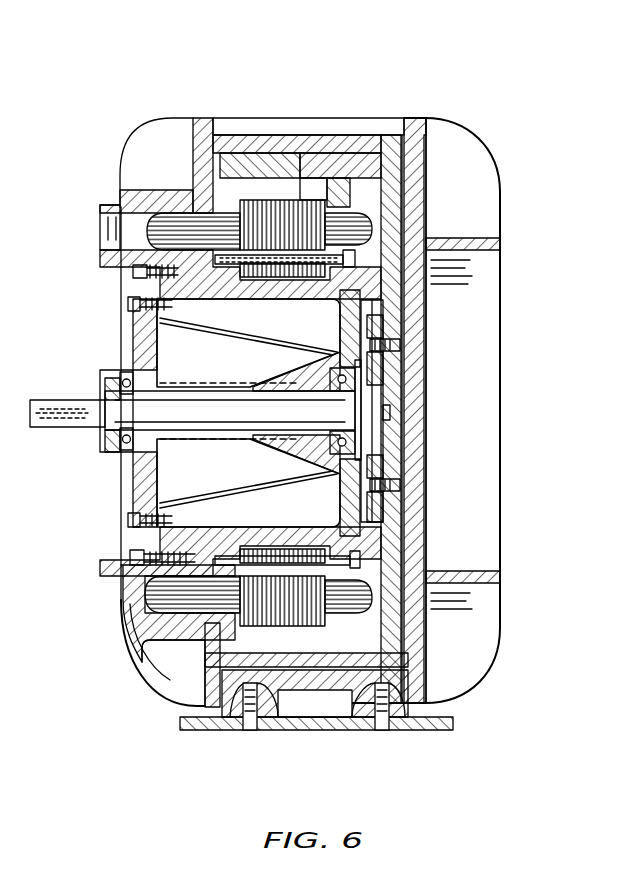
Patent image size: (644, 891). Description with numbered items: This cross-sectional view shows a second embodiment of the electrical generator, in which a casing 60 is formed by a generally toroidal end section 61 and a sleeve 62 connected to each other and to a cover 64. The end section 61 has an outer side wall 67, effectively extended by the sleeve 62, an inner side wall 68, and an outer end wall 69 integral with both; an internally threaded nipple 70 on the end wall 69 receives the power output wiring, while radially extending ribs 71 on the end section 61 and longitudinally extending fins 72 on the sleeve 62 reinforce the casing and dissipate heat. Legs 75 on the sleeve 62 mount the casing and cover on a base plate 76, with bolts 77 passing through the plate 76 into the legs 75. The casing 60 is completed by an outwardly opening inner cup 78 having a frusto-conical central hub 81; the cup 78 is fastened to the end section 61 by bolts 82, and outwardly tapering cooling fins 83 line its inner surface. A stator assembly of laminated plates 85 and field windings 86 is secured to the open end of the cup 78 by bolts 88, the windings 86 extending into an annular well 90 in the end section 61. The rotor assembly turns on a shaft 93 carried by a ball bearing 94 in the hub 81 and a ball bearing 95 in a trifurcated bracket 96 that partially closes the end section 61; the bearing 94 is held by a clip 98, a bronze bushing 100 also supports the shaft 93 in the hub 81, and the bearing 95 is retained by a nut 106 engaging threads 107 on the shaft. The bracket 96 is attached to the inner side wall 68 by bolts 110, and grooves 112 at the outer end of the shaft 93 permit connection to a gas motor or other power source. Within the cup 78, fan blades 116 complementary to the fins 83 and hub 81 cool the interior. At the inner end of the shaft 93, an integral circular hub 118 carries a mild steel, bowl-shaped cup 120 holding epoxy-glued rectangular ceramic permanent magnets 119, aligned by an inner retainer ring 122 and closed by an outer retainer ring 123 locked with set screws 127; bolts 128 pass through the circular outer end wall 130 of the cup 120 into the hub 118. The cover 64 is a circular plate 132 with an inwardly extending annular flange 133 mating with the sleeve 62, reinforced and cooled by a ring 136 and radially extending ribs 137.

The casing 60 is at (182, 78).
The toroidal end section 61 is at (188, 119).
The sleeve 62 is at (250, 135).
The cover 64 is at (501, 410).
The outer side wall 67 is at (143, 650).
The inner side wall 68 is at (147, 583).
The outer end wall 69 is at (145, 604).
The internally threaded nipple 70 is at (120, 207).
The radially extending ribs 71 is at (157, 155).
The longitudinally extending fins 72 is at (393, 124).
The legs 75 is at (270, 717).
The base plate 76 is at (455, 722).
The bolts 77 is at (247, 730).
The inner cup 78 is at (395, 514).
The central hub 81 is at (300, 440).
The bolts 82 is at (133, 271).
The cooling fins 83 is at (258, 413).
The laminated plates 85 is at (305, 175).
The field windings 86 is at (352, 190).
The bolts 88 is at (355, 257).
The annular well 90 is at (165, 640).
The shaft 93 is at (210, 404).
The ball bearing 94 is at (347, 368).
The ball bearing 95 is at (133, 449).
The trifurcated bracket 96 is at (140, 321).
The clip 98 is at (377, 424).
The bronze bushing 100 is at (306, 380).
The nut 106 is at (110, 443).
The threads 107 is at (107, 391).
The bolts 110 is at (128, 303).
The grooves 112 is at (50, 430).
The blades 116 is at (248, 413).
The circular hub 118 is at (390, 413).
The permanent magnets 119 is at (295, 210).
The bowl-shaped cup 120 is at (340, 165).
The inner retainer ring 122 is at (360, 668).
The outer retainer ring 123 is at (220, 647).
The set screws 127 is at (198, 157).
The bolts 128 is at (398, 345).
The outer end wall 130 is at (398, 294).
The circular plate 132 is at (414, 127).
The annular flange 133 is at (400, 160).
The ring 136 is at (440, 250).
The radially extending ribs 137 is at (458, 403).